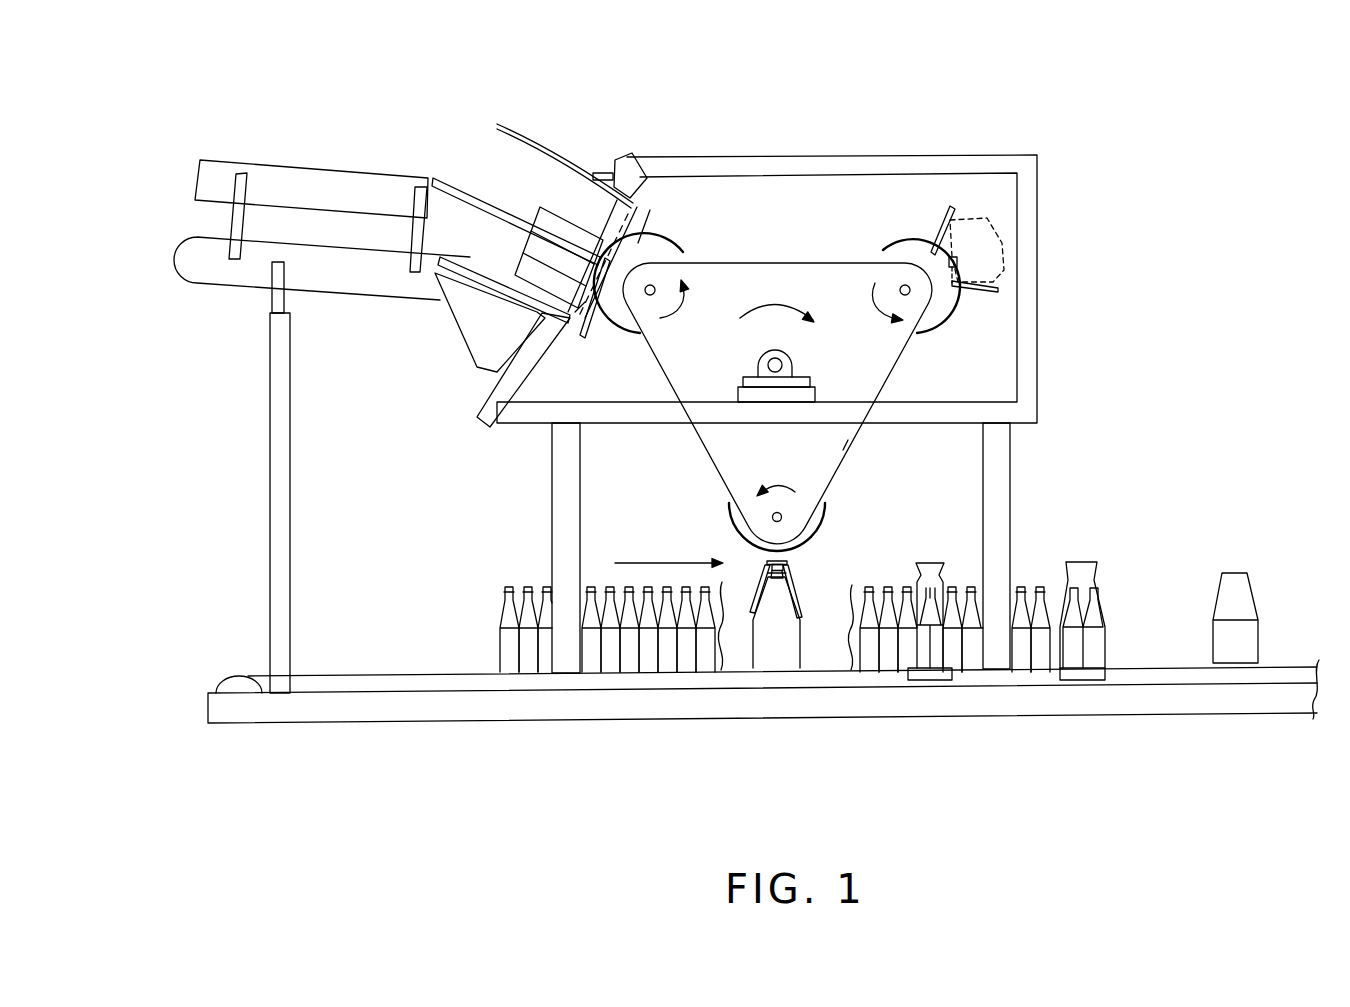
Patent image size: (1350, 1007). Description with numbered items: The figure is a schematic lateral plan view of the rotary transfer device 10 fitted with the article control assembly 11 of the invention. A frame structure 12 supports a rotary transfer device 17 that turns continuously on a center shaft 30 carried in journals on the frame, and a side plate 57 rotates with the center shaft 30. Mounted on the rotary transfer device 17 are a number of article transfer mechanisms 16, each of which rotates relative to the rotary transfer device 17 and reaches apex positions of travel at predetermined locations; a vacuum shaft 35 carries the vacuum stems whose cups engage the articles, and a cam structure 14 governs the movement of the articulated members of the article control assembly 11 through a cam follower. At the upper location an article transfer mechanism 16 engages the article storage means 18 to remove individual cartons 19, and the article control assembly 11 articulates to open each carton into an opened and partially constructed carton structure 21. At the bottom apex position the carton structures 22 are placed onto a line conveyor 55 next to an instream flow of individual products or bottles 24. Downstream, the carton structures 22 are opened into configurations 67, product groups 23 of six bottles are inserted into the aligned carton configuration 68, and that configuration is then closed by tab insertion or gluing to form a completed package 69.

The rotary transfer device 10 is at (887, 96).
The article control assembly 11 is at (667, 240).
The frame structure 12 is at (1052, 375).
The cam structure 14 is at (896, 255).
The article transfer mechanism 16 is at (575, 312).
The rotary transfer device 17 is at (772, 257).
The article storage means 18 is at (432, 136).
The carton 19 is at (603, 184).
The opened and partially constructed carton structure 21 is at (1007, 243).
The carton structure 22 is at (776, 658).
The product group 23 is at (1092, 608).
The bottle 24 is at (505, 622).
The center shaft 30 is at (775, 365).
The vacuum shaft 35 is at (905, 290).
The line conveyor 55 is at (342, 675).
The side plate 57 is at (818, 450).
The carton configuration 67 is at (927, 673).
The aligned carton configuration 68 is at (1087, 673).
The completed package 69 is at (1238, 607).